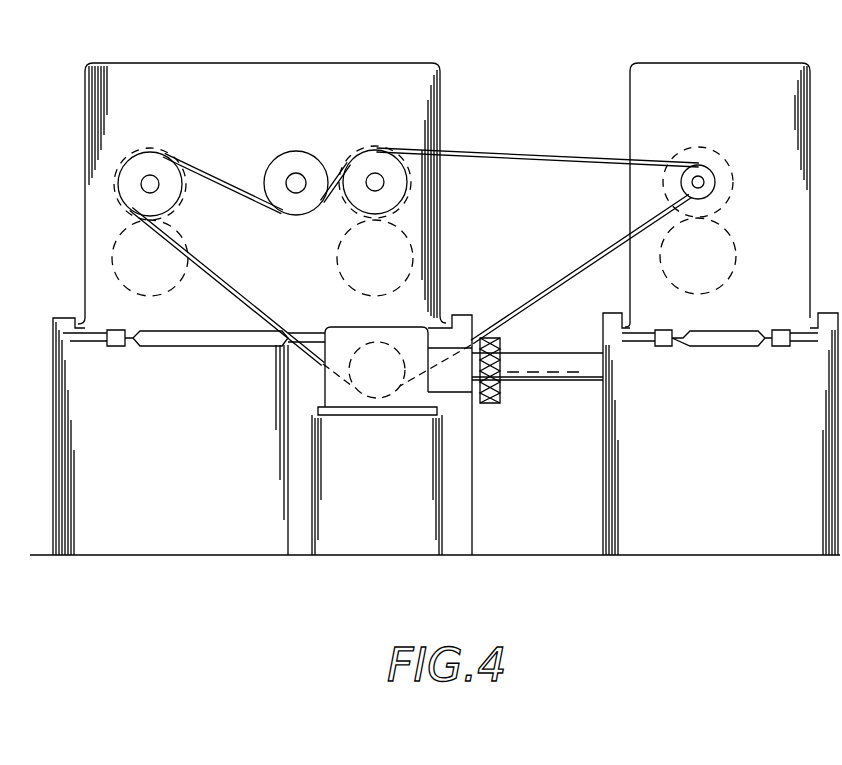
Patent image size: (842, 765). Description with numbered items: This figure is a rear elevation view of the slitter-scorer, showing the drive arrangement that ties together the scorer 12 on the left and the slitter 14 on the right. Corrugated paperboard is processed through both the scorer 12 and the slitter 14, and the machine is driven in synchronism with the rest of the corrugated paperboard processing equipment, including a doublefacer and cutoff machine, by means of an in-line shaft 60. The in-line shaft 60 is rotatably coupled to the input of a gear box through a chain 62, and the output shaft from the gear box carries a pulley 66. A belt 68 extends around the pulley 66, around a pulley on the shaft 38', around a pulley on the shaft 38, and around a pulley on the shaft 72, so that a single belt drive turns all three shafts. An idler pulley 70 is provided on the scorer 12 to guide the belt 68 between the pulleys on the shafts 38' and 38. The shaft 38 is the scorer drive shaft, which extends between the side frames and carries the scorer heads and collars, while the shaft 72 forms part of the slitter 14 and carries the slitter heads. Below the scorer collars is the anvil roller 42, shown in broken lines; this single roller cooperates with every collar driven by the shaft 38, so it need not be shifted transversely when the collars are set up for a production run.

The scorer 12 is at (291, 30).
The slitter 14 is at (734, 30).
The shaft 38 is at (375, 162).
The shaft 38' is at (156, 168).
The idler pulley 70 is at (296, 151).
The shaft 72 is at (700, 180).
The anvil roller 42 is at (340, 275).
The belt 68 is at (560, 280).
The pulley 66 is at (370, 395).
The chain 62 is at (498, 405).
The in-line shaft 60 is at (567, 372).